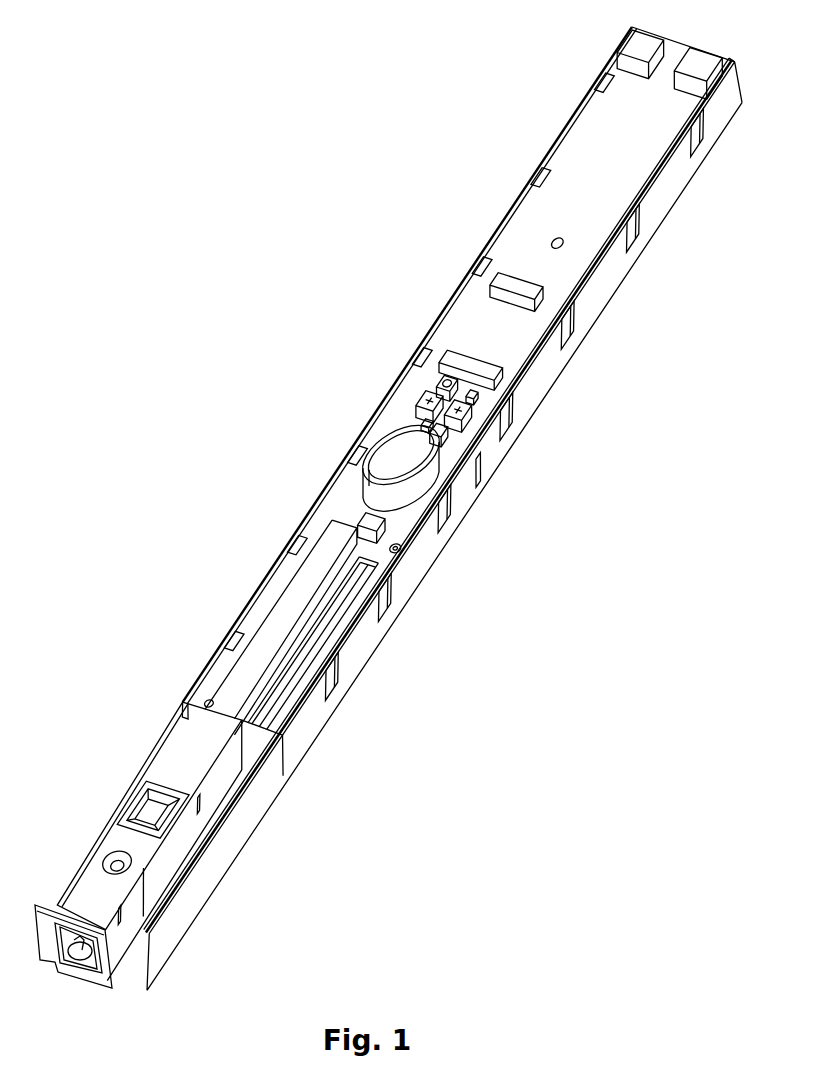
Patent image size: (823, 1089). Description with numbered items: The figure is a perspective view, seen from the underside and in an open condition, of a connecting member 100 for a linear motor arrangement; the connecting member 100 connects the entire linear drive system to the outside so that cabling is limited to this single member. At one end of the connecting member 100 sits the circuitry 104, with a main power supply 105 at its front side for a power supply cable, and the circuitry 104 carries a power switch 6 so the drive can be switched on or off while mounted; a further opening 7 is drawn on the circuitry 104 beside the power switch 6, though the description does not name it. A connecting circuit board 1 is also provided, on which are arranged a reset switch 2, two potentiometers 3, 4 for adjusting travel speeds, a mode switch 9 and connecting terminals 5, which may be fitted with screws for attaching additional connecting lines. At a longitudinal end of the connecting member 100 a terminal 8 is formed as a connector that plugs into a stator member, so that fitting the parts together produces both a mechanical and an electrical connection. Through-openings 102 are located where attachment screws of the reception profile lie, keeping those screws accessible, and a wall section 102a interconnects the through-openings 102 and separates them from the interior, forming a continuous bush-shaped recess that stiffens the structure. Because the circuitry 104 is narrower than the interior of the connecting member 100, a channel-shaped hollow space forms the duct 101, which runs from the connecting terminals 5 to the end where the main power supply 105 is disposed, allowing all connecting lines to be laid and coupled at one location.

The connecting circuit board 1 is at (652, 298).
The reset switch 2 is at (437, 377).
The potentiometer 3 is at (418, 398).
The potentiometer 4 is at (472, 409).
The connecting terminals 5 is at (320, 563).
The power switch 6 is at (145, 820).
The socket hole 7 is at (92, 868).
The terminal 8 is at (700, 67).
The mode switch 9 is at (423, 423).
The connecting member 100 is at (236, 176).
The duct 101 is at (128, 972).
The through-opening 102 is at (360, 462).
The wall section 102a is at (450, 476).
The circuitry 104 is at (180, 751).
The main power supply 105 is at (73, 963).